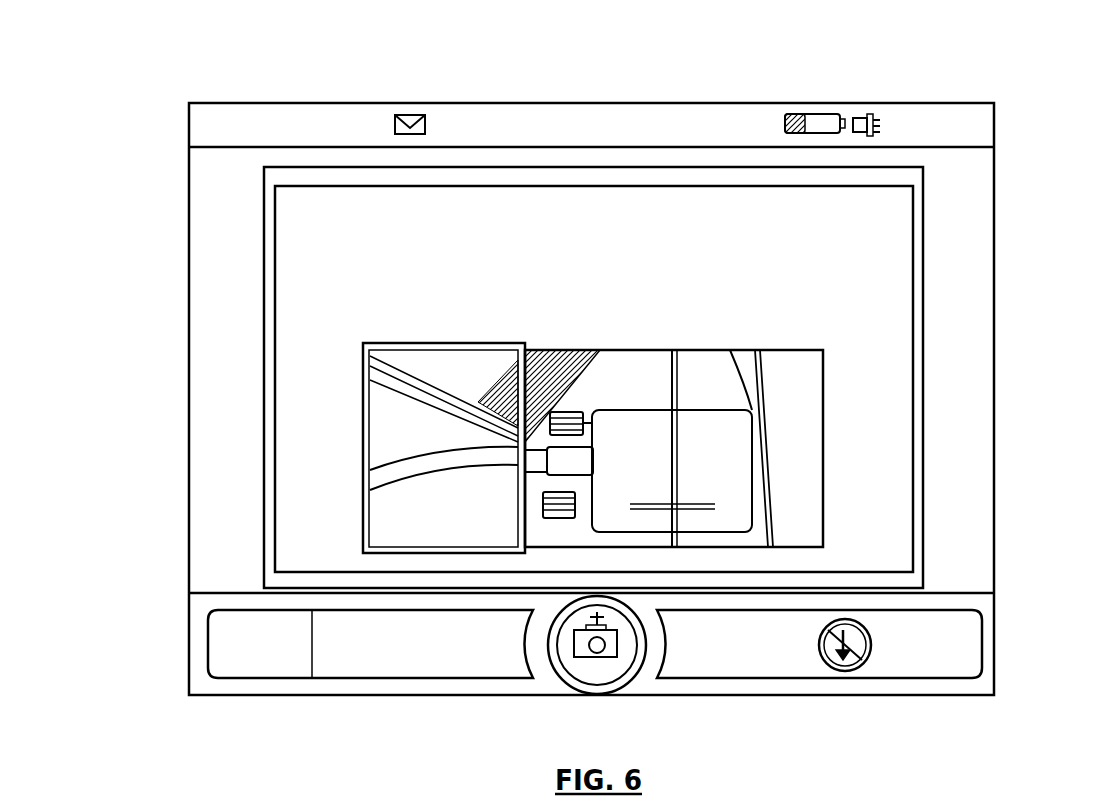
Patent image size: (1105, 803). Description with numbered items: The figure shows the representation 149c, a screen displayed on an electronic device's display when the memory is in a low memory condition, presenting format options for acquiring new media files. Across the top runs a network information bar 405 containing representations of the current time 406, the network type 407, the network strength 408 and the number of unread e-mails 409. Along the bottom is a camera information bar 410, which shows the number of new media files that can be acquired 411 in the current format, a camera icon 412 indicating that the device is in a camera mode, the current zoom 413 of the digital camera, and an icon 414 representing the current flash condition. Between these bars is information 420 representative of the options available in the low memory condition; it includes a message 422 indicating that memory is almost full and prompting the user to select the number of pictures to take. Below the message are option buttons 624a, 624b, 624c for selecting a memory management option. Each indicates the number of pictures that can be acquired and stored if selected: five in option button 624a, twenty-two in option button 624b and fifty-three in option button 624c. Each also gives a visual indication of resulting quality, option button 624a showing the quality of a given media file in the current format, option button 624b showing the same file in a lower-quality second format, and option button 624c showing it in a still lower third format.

The representation 149c is at (146, 112).
The network information bar 405 is at (1005, 120).
The current time 406 is at (662, 103).
The network type 407 is at (917, 105).
The network strength 408 is at (812, 110).
The number of unread e-mails 409 is at (393, 103).
The camera information bar 410 is at (1005, 640).
The number of new media files that can be acquired 411 is at (343, 660).
The camera icon 412 is at (568, 680).
The current zoom 413 is at (742, 662).
The flash condition icon 414 is at (862, 670).
The information 420 is at (300, 206).
The message 422 is at (890, 205).
The option button 624a is at (476, 540).
The option button 624b is at (632, 523).
The option button 624c is at (810, 535).